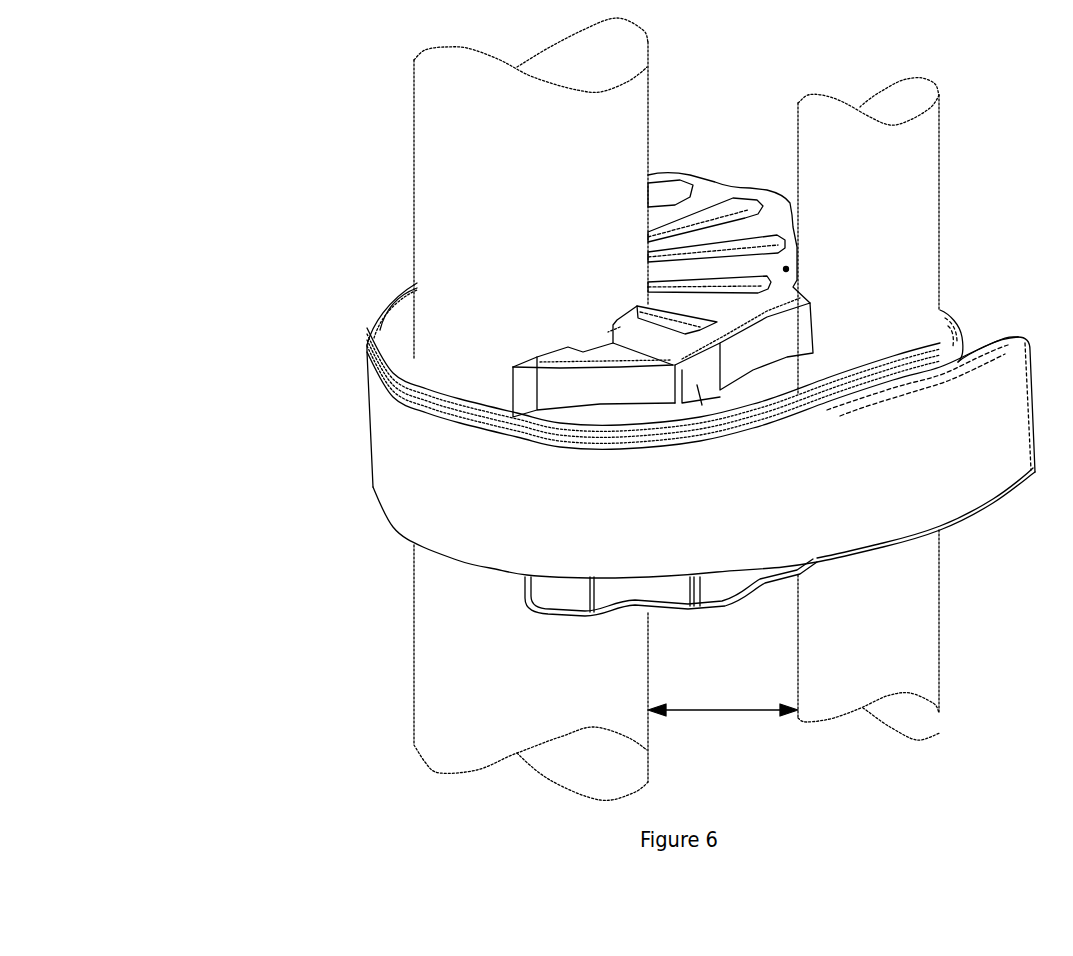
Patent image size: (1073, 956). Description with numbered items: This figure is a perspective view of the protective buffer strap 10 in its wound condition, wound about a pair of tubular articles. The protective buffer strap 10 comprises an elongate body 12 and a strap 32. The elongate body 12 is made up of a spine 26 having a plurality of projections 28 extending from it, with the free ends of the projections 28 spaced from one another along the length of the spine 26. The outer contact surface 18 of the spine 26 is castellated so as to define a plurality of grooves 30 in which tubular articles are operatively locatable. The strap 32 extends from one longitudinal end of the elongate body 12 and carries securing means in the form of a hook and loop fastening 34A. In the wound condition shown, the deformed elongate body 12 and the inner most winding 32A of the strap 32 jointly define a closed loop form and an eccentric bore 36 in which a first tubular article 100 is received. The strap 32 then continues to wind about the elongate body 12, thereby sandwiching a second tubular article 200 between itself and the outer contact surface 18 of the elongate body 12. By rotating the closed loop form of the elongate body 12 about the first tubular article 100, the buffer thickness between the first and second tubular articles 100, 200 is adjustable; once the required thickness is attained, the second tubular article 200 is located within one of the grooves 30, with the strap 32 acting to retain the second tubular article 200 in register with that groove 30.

The protective buffer strap 10 is at (224, 231).
The elongate body 12 is at (714, 200).
The outer contact surface 18 is at (702, 405).
The spine 26 is at (790, 268).
The projections 28 is at (710, 211).
The grooves 30 is at (640, 393).
The strap 32 is at (977, 485).
The inner most winding 32A is at (417, 383).
The hook and loop fastening 34A is at (947, 360).
The eccentric bore 36 is at (410, 300).
The first tubular article 100 is at (463, 118).
The second tubular article 200 is at (912, 143).